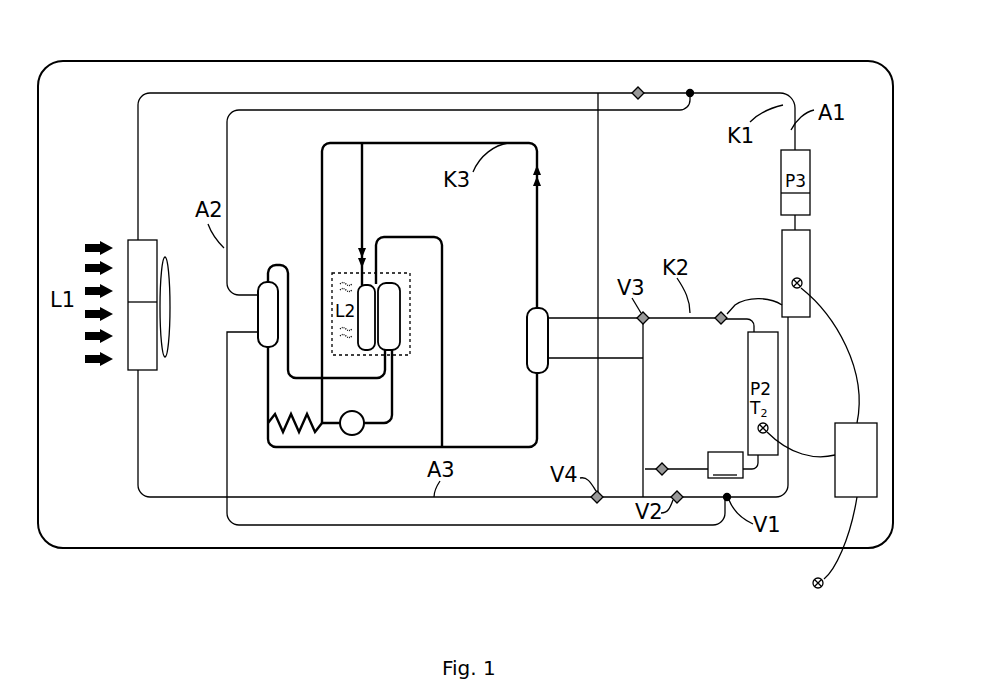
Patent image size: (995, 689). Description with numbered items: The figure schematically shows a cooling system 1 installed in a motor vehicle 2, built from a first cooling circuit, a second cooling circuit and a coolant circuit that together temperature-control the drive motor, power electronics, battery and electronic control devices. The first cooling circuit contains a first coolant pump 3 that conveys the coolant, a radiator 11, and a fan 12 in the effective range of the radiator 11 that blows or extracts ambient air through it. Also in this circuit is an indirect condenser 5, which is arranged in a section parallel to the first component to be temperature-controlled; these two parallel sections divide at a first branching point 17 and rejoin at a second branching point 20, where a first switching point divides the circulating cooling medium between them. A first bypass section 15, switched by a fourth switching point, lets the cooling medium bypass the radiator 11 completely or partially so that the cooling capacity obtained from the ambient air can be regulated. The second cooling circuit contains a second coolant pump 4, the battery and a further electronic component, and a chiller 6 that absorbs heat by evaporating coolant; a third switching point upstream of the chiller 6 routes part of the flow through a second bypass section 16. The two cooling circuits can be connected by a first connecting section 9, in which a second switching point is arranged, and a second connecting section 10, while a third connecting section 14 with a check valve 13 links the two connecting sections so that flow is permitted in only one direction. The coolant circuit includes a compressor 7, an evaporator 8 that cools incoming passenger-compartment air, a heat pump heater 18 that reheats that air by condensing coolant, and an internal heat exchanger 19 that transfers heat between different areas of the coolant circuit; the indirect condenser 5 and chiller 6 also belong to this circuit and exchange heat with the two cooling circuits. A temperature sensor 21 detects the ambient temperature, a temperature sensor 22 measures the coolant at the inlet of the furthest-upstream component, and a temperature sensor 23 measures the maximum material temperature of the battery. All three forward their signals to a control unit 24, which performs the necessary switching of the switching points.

The cooling system 1 is at (94, 99).
The motor vehicle 2 is at (122, 61).
The first coolant pump 3 is at (640, 88).
The second coolant pump 4 is at (801, 318).
The indirect condenser 5 is at (268, 314).
The chiller 6 is at (537, 340).
The compressor 7 is at (352, 437).
The evaporator 8 is at (366, 317).
The first connecting section 9 is at (682, 476).
The second connecting section 10 is at (643, 479).
The radiator 11 is at (142, 305).
The fan 12 is at (170, 320).
The check valve 13 is at (664, 463).
The third connecting section 14 is at (676, 466).
The first bypass section 15 is at (600, 266).
The second bypass section 16 is at (646, 344).
The first branching point 17 is at (693, 91).
The heat pump heater 18 is at (389, 316).
The internal heat exchanger 19 is at (273, 437).
The second branching point 20 is at (731, 496).
The temperature sensor 21 is at (826, 594).
The temperature sensor 22 is at (802, 281).
The temperature sensor 23 is at (769, 421).
The control unit 24 is at (868, 474).